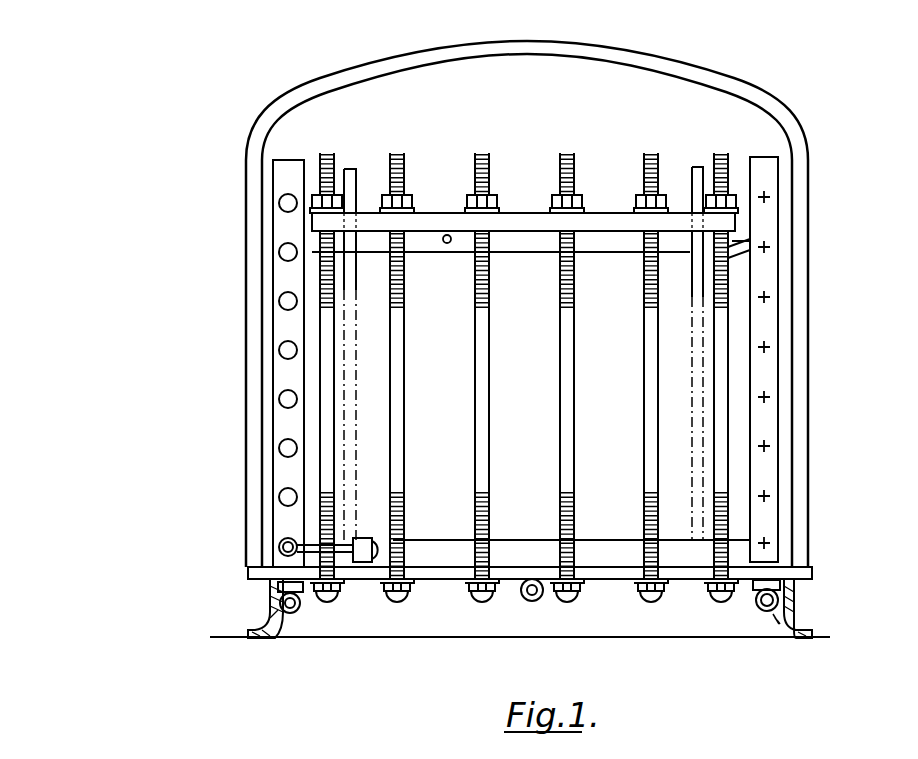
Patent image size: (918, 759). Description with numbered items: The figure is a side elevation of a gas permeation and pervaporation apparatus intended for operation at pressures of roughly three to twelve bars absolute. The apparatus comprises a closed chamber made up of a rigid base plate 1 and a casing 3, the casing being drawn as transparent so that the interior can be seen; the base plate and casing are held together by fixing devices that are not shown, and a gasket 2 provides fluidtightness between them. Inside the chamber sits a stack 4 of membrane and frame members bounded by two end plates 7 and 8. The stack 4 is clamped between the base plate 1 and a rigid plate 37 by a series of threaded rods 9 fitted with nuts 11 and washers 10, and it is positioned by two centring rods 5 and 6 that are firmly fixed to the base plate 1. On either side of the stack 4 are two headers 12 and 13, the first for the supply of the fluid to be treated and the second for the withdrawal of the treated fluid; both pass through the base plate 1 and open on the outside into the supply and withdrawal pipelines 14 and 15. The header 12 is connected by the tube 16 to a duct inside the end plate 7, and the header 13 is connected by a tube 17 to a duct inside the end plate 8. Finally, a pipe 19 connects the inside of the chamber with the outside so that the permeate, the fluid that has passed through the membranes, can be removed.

The base plate 1 is at (514, 572).
The gasket 2 is at (819, 560).
The casing 3 is at (250, 552).
The stack 4 is at (683, 444).
The centring rod 5 is at (345, 168).
The centring rod 6 is at (697, 167).
The end plate 7 is at (456, 556).
The end plate 8 is at (447, 235).
The threaded rod 9 is at (391, 158).
The washer 10 is at (667, 586).
The nut 11 is at (493, 197).
The header 12 is at (280, 477).
The header 13 is at (752, 314).
The supply pipeline 14 is at (294, 614).
The withdrawal pipeline 15 is at (765, 612).
The tube 16 is at (345, 562).
The tube 17 is at (730, 268).
The pipe 19 is at (534, 602).
The rigid plate 37 is at (592, 218).